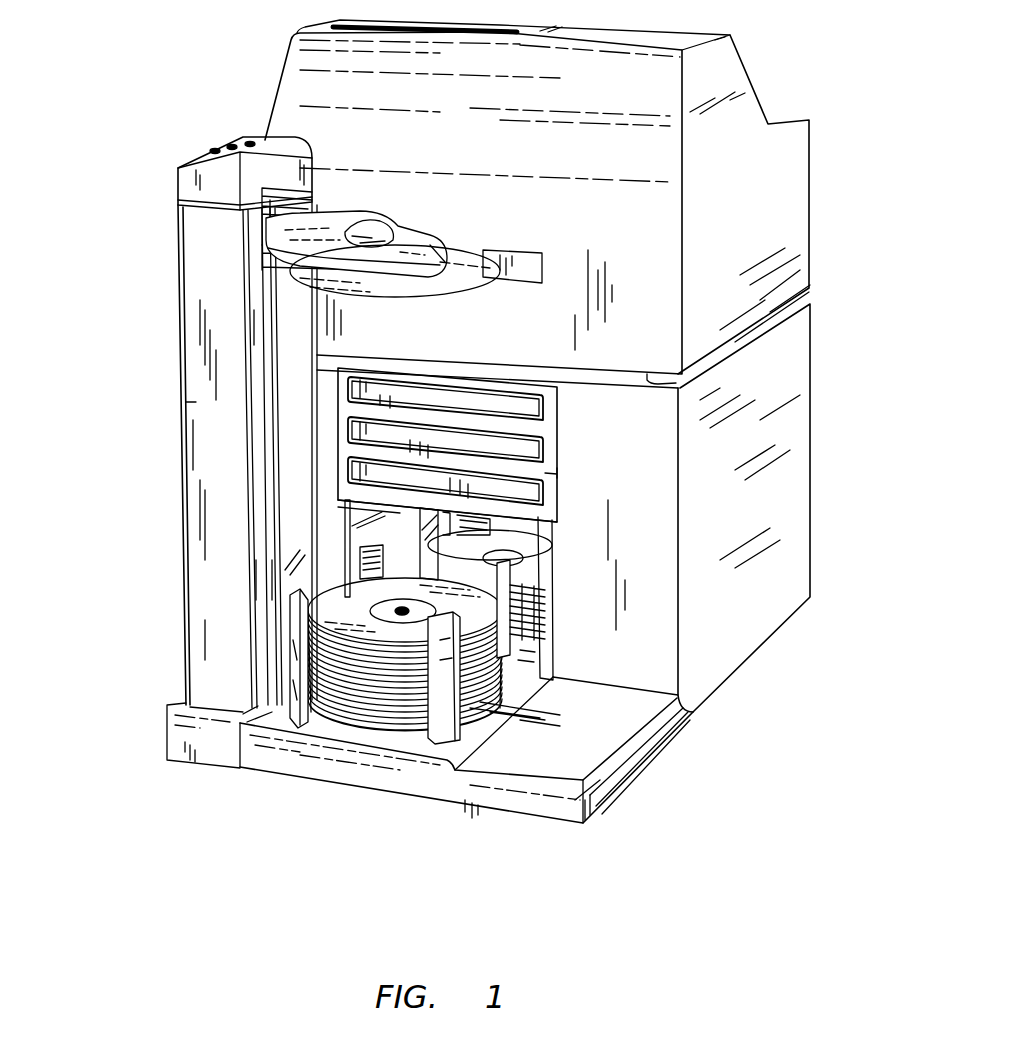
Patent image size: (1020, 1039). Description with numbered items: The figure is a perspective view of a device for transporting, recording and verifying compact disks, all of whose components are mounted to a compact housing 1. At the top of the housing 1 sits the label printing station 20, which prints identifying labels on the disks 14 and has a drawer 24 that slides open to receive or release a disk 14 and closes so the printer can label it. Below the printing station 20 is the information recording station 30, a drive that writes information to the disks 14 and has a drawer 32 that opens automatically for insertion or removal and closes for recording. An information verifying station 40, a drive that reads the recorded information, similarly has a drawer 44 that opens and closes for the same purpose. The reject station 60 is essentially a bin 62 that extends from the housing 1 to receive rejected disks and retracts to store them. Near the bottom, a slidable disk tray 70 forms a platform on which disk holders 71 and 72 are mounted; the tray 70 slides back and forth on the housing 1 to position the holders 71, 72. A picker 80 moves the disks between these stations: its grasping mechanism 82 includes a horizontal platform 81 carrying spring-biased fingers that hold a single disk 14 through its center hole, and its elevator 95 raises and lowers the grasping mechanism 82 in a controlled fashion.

The housing 1 is at (798, 472).
The disk 14 is at (455, 297).
The label printing station 20 is at (785, 221).
The drawer 24 is at (530, 257).
The information recording station 30 is at (547, 423).
The drawer 32 is at (530, 404).
The information verifying station 40 is at (548, 472).
The drawer 44 is at (530, 452).
The reject station 60 is at (547, 518).
The bin 62 is at (530, 495).
The slidable disk tray 70 is at (350, 752).
The disk holder 71 is at (440, 727).
The disk holder 72 is at (545, 605).
The picker 80 is at (140, 301).
The horizontal platform 81 is at (360, 225).
The grasping mechanism 82 is at (403, 237).
The elevator 95 is at (190, 402).